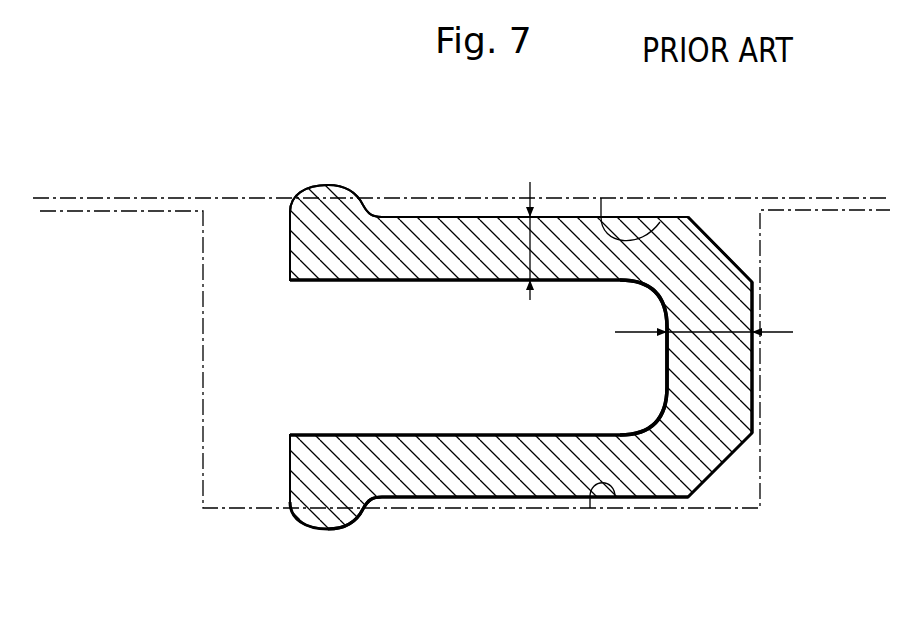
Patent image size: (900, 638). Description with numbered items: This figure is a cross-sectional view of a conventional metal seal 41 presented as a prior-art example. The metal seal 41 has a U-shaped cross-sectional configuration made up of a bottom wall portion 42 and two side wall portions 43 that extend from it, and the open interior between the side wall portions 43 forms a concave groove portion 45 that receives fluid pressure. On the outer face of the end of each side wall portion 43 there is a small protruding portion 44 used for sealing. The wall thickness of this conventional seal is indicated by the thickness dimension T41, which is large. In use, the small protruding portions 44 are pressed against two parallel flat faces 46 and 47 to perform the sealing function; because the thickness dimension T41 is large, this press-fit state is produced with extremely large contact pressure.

The metal seal 41 is at (427, 209).
The bottom wall portion 42 is at (722, 363).
The side wall portion 43 is at (473, 235).
The small protruding portion 44 is at (326, 187).
The concave groove portion 45 is at (384, 368).
The flat face 46 is at (660, 225).
The flat face 47 is at (622, 497).
The thickness dimension T41 is at (523, 255).